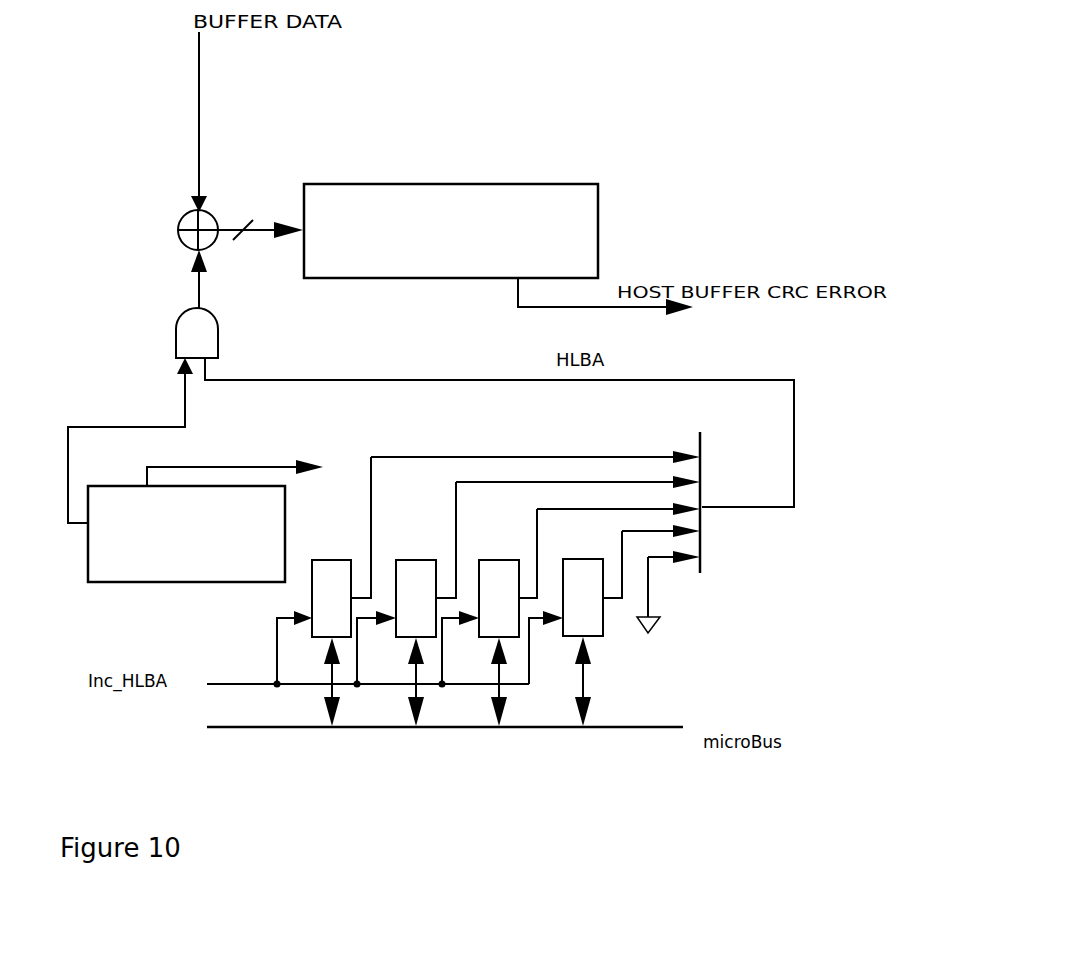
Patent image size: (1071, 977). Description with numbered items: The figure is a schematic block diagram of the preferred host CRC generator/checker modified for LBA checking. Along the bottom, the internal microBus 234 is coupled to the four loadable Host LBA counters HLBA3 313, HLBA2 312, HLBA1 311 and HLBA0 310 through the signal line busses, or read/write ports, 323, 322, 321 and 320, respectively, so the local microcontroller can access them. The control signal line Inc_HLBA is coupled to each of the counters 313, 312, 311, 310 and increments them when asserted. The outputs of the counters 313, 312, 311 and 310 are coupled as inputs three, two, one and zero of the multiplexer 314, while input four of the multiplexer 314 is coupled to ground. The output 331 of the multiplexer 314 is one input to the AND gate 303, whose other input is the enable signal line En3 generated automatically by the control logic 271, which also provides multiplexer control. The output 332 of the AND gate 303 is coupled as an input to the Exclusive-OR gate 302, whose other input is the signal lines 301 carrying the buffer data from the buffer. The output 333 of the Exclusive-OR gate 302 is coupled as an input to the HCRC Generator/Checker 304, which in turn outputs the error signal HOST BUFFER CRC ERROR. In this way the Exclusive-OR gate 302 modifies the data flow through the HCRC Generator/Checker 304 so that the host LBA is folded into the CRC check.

The signal lines 301 is at (199, 68).
The Exclusive-OR gate 302 is at (206, 220).
The AND gate 303 is at (205, 328).
The HCRC Generator/Checker 304 is at (325, 192).
The output of the Exclusive-OR gate 333 is at (252, 232).
The output of the AND gate 332 is at (199, 298).
The output of the multiplexer 331 is at (512, 380).
The multiplexer 314 is at (700, 440).
The control logic 271 is at (135, 583).
The Host LBA counter HLBA3 313 is at (344, 570).
The Host LBA counter HLBA2 312 is at (430, 570).
The Host LBA counter HLBA1 311 is at (512, 570).
The Host LBA counter HLBA0 310 is at (597, 570).
The signal line bus 323 is at (337, 715).
The signal line bus 322 is at (420, 715).
The signal line bus 321 is at (505, 715).
The signal line bus 320 is at (587, 712).
The microBus 234 is at (660, 727).